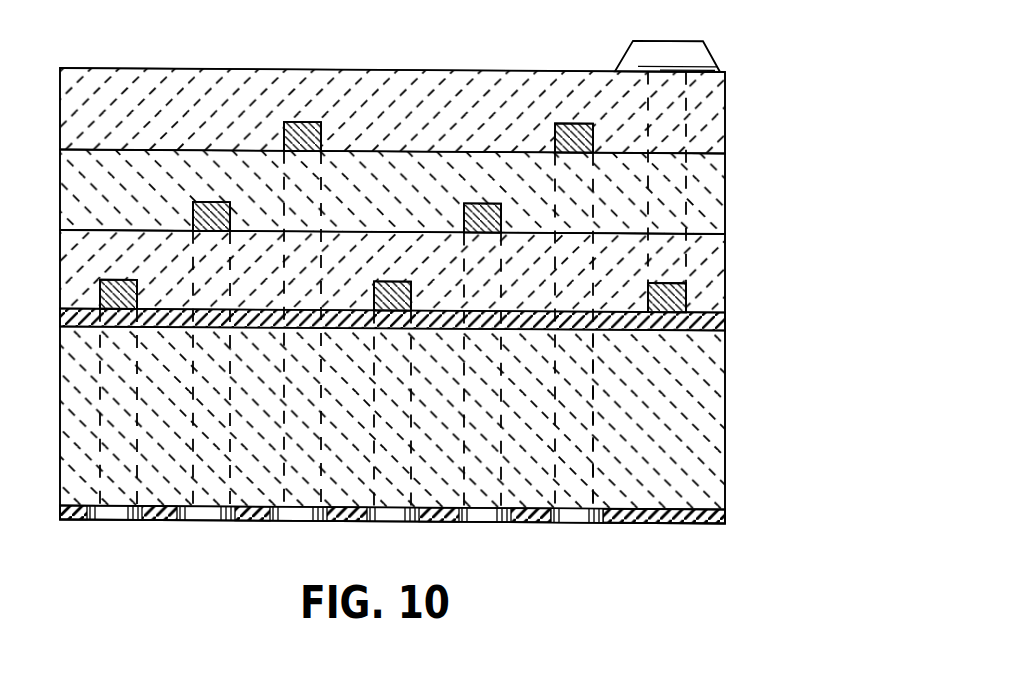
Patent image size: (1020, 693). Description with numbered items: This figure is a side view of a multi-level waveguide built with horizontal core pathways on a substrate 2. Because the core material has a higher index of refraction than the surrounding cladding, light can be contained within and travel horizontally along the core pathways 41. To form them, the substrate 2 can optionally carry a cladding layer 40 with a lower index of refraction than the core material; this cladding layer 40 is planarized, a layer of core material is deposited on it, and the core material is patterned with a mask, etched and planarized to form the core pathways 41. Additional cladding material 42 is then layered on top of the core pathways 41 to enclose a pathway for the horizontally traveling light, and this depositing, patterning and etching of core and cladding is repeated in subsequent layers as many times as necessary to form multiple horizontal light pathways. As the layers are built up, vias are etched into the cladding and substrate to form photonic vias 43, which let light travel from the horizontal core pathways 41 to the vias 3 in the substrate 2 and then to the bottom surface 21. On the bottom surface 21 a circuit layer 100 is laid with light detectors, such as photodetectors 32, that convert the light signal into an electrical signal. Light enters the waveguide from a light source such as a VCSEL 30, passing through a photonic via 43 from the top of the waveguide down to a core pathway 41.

The VCSEL 30 is at (692, 52).
The photonic vias 43 is at (45, 253).
The cladding material 42 is at (754, 244).
The core pathways 41 is at (687, 292).
The cladding layer 40 is at (726, 322).
The substrate 2 is at (726, 422).
The circuit layer 100 is at (726, 516).
The bottom surface 21 is at (679, 523).
The vias 3 is at (590, 455).
The photodetectors 32 is at (568, 518).